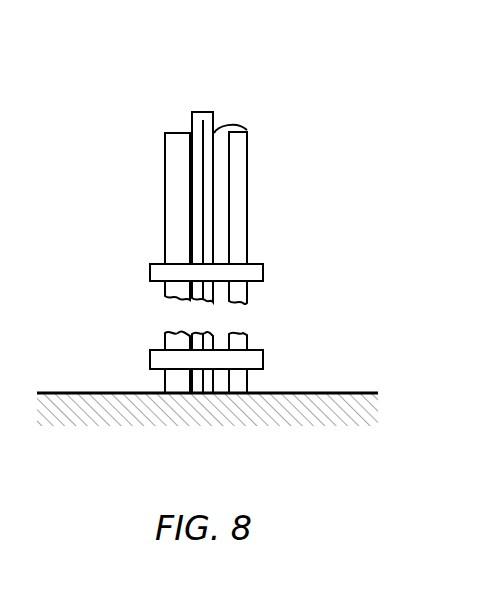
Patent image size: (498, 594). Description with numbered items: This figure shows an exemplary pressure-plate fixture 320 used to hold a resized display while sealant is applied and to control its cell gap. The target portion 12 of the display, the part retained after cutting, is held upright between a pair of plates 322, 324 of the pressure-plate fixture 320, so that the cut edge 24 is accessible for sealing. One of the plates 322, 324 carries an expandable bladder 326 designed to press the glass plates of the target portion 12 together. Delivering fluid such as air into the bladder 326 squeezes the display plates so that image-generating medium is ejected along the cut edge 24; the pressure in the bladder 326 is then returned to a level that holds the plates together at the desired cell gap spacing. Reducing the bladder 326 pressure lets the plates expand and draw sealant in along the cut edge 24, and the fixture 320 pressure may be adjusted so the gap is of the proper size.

The target portion 12 is at (143, 105).
The cut edge 24 is at (203, 112).
The pressure-plate fixture 320 is at (292, 180).
The plate 322 is at (165, 203).
The plate 324 is at (246, 225).
The expandable bladder 326 is at (243, 125).